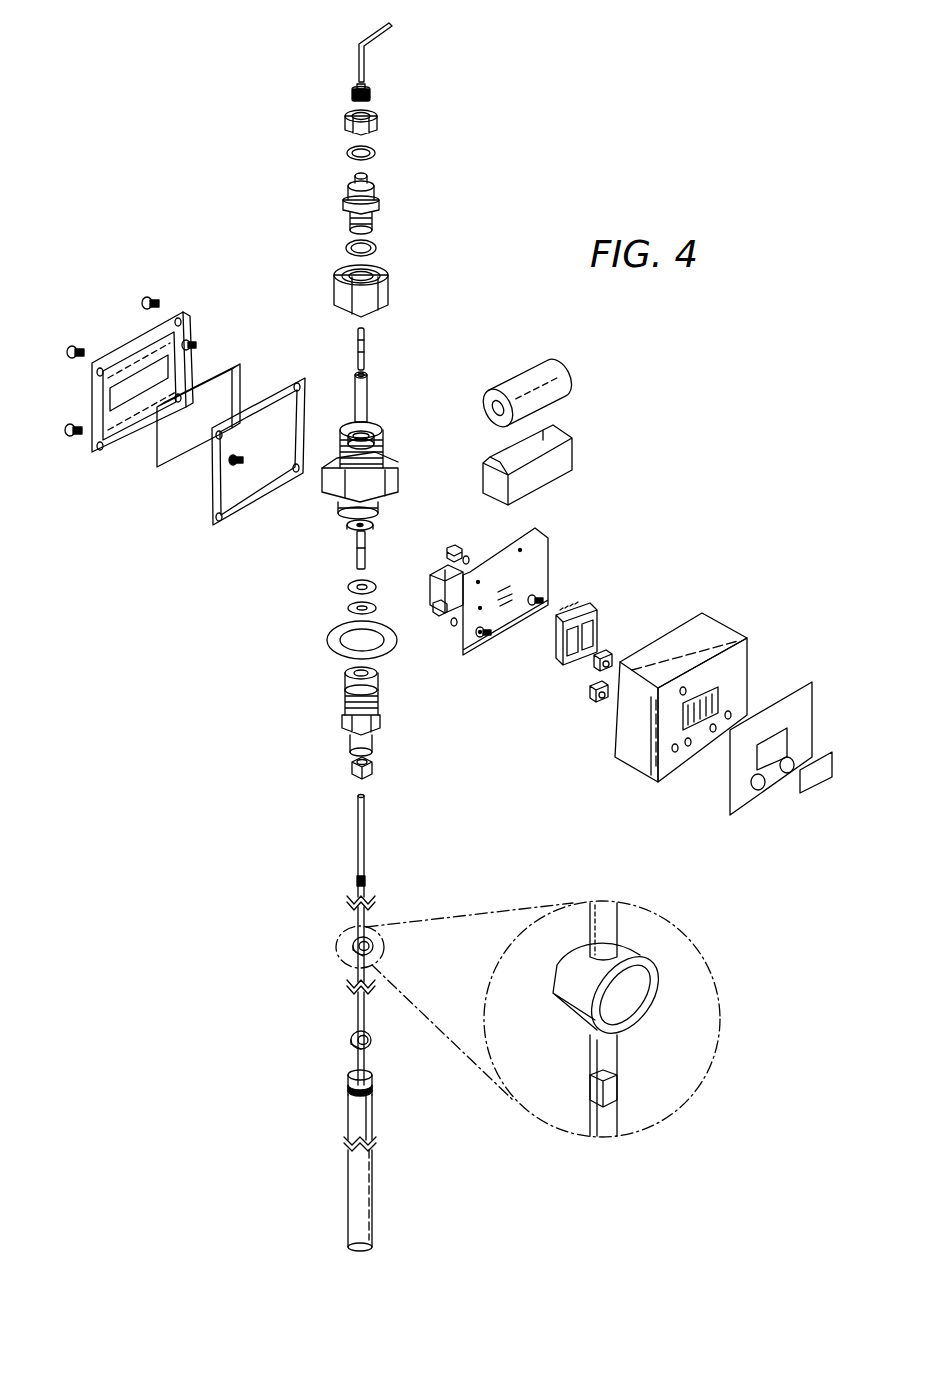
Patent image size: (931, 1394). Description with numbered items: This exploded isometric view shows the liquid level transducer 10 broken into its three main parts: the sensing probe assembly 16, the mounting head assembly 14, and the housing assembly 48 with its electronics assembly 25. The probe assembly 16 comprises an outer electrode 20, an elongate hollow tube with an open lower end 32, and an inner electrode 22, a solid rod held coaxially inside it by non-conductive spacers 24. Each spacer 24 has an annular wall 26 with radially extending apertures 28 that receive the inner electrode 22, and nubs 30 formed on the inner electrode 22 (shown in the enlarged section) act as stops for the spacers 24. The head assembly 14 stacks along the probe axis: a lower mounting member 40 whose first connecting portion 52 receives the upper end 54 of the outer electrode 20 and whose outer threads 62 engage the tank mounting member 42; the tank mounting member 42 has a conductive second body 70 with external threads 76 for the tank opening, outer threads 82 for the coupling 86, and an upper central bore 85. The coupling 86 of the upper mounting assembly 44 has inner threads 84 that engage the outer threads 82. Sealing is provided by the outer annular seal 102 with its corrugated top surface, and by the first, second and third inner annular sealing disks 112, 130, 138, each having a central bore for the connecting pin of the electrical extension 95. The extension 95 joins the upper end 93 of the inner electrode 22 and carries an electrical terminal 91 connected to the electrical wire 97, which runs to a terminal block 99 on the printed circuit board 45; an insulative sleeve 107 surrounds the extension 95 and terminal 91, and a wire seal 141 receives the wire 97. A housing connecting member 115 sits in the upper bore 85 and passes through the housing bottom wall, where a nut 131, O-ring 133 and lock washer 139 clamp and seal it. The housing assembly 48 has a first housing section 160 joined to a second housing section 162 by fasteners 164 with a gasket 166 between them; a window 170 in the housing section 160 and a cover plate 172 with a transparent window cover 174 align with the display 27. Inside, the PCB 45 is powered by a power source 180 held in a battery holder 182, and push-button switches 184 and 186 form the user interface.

The liquid level transducer 10 is at (712, 402).
The mounting head assembly 14 is at (268, 570).
The sensing probe assembly 16 is at (250, 968).
The outer electrode 20 is at (366, 1110).
The inner electrode 22 is at (366, 860).
The spacer 24 is at (352, 766).
The electronics assembly 25 is at (630, 558).
The annular wall 26 is at (354, 796).
The display 27 is at (592, 628).
The apertures 28 is at (370, 766).
The nubs 30 is at (357, 882).
The lower end 32 is at (372, 1240).
The lower mounting member 40 is at (340, 706).
The tank mounting member 42 is at (396, 444).
The upper mounting assembly 44 is at (432, 197).
The printed circuit board 45 is at (543, 553).
The housing assembly 48 is at (730, 845).
The first connecting portion 52 is at (389, 737).
The upper end 54 is at (312, 1094).
The outer threads 62 is at (380, 702).
The second body 70 is at (390, 466).
The external threads 76 is at (346, 512).
The outer threads 82 is at (346, 436).
The inner threads 84 is at (344, 272).
The upper central bore 85 is at (364, 440).
The coupling 86 is at (338, 298).
The electrical terminal 91 is at (357, 344).
The upper end 93 is at (366, 800).
The electrical extension 95 is at (372, 524).
The electrical wire 97 is at (366, 46).
The terminal block 99 is at (440, 584).
The outer annular seal 102 is at (330, 644).
The insulative sleeve 107 is at (368, 392).
The first inner annular sealing disk 112 is at (356, 534).
The housing connecting member 115 is at (340, 205).
The second inner annular sealing disk 130 is at (348, 585).
The nut 131 is at (347, 117).
The O-ring 133 is at (376, 248).
The third inner annular sealing disk 138 is at (348, 607).
The lock washer 139 is at (348, 155).
The wire seal 141 is at (355, 95).
The first housing section 160 is at (710, 632).
The second housing section 162 is at (142, 340).
The fasteners 164 is at (154, 298).
The gasket 166 is at (212, 490).
The window 170 is at (718, 695).
The cover plate 172 is at (736, 800).
The transparent window cover 174 is at (808, 785).
The power source 180 is at (530, 382).
The battery holder 182 is at (567, 456).
The push-button switch 184 is at (590, 692).
The push-button switch 186 is at (594, 664).